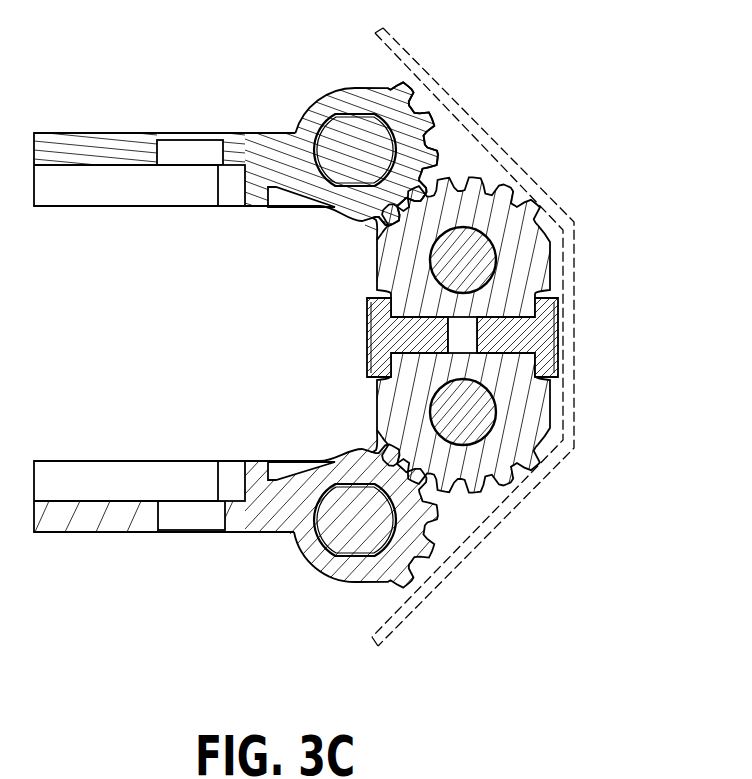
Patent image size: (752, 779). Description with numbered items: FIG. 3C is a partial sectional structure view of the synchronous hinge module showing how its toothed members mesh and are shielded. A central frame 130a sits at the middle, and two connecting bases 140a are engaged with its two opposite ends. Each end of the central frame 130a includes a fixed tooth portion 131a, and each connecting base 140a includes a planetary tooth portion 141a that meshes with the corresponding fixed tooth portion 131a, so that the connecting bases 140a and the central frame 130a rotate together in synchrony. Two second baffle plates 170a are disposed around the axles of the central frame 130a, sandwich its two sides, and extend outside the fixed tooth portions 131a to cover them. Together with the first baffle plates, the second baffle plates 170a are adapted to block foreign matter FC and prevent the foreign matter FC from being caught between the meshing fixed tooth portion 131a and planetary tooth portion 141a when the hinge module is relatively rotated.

The connecting base 140a is at (263, 150).
The planetary tooth portion 141a is at (430, 120).
The fixed tooth portion 131a is at (503, 193).
The central frame 130a is at (528, 257).
The second baffle plate 170a is at (520, 470).
The foreign matter FC is at (568, 390).